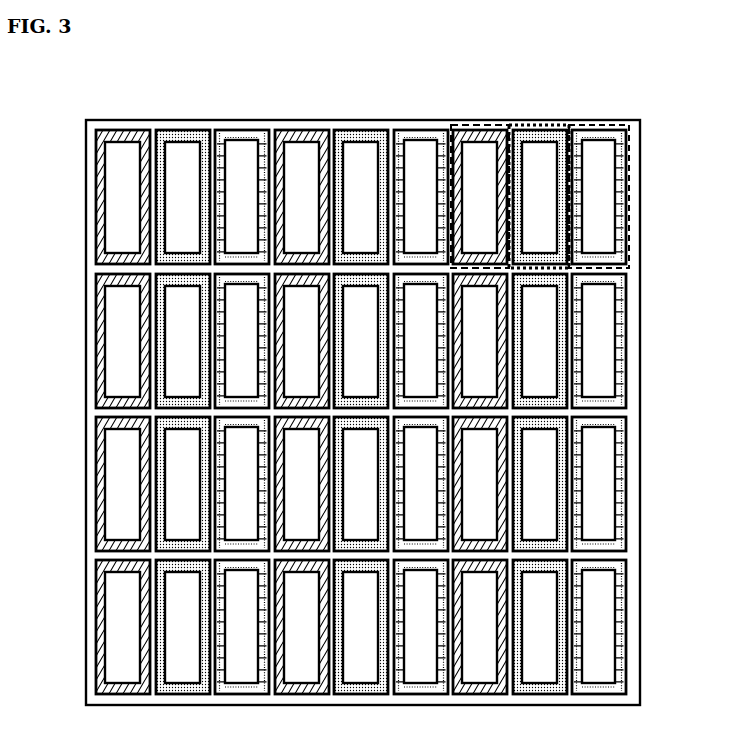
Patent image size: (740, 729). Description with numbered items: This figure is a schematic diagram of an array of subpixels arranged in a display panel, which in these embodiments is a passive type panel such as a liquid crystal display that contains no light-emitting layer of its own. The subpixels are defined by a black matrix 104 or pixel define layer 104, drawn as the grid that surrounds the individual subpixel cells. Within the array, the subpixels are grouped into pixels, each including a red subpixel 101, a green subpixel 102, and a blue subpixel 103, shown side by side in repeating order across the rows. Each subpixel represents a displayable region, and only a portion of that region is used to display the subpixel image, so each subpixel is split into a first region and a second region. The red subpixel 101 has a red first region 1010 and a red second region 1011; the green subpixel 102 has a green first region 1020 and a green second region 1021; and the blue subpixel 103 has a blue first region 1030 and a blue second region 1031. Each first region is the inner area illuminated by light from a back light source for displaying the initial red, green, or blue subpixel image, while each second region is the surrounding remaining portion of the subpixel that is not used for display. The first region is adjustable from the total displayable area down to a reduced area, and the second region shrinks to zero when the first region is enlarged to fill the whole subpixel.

The red subpixel 101 is at (480, 124).
The green subpixel 102 is at (542, 124).
The blue subpixel 103 is at (588, 124).
The black matrix or pixel define layer 104 is at (632, 293).
The red first region 1010 is at (122, 180).
The red second region 1011 is at (138, 133).
The green first region 1020 is at (173, 156).
The green second region 1021 is at (180, 130).
The blue first region 1030 is at (240, 158).
The blue second region 1031 is at (260, 133).